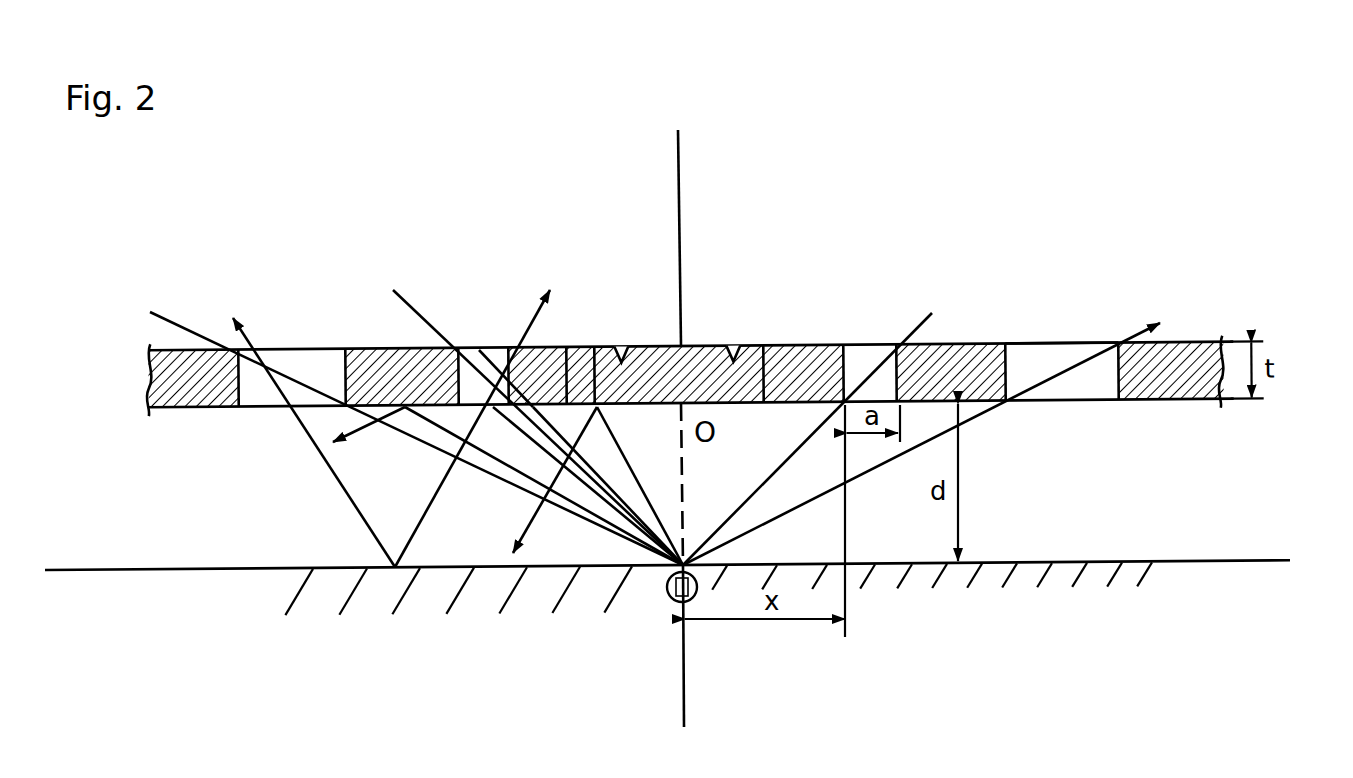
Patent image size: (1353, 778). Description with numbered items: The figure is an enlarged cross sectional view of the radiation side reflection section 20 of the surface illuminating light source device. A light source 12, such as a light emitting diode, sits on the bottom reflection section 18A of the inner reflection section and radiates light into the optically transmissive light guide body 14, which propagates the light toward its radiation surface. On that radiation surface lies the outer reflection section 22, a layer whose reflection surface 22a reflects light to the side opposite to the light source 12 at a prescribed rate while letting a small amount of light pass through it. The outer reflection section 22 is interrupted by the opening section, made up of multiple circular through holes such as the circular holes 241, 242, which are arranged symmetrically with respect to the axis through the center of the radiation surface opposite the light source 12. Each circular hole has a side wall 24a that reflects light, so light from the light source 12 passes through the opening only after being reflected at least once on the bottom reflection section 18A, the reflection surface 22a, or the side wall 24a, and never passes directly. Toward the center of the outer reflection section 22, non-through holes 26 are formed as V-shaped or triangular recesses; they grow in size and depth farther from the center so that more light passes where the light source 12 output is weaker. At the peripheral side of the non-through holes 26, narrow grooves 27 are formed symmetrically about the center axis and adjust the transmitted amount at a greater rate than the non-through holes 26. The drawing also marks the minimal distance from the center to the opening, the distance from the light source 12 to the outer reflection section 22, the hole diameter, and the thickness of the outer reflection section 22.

The radiation side reflection section 20 is at (746, 292).
The outer reflection section 22 is at (951, 346).
The reflection surface 22a is at (1196, 404).
The circular hole 241 is at (866, 355).
The circular hole 242 is at (1090, 285).
The side wall 24a is at (1016, 356).
The non-through hole 26 is at (622, 346).
The narrow groove 27 is at (575, 346).
The light source 12 is at (670, 583).
The light guide body 14 is at (1238, 495).
The bottom reflection section 18A is at (1015, 565).